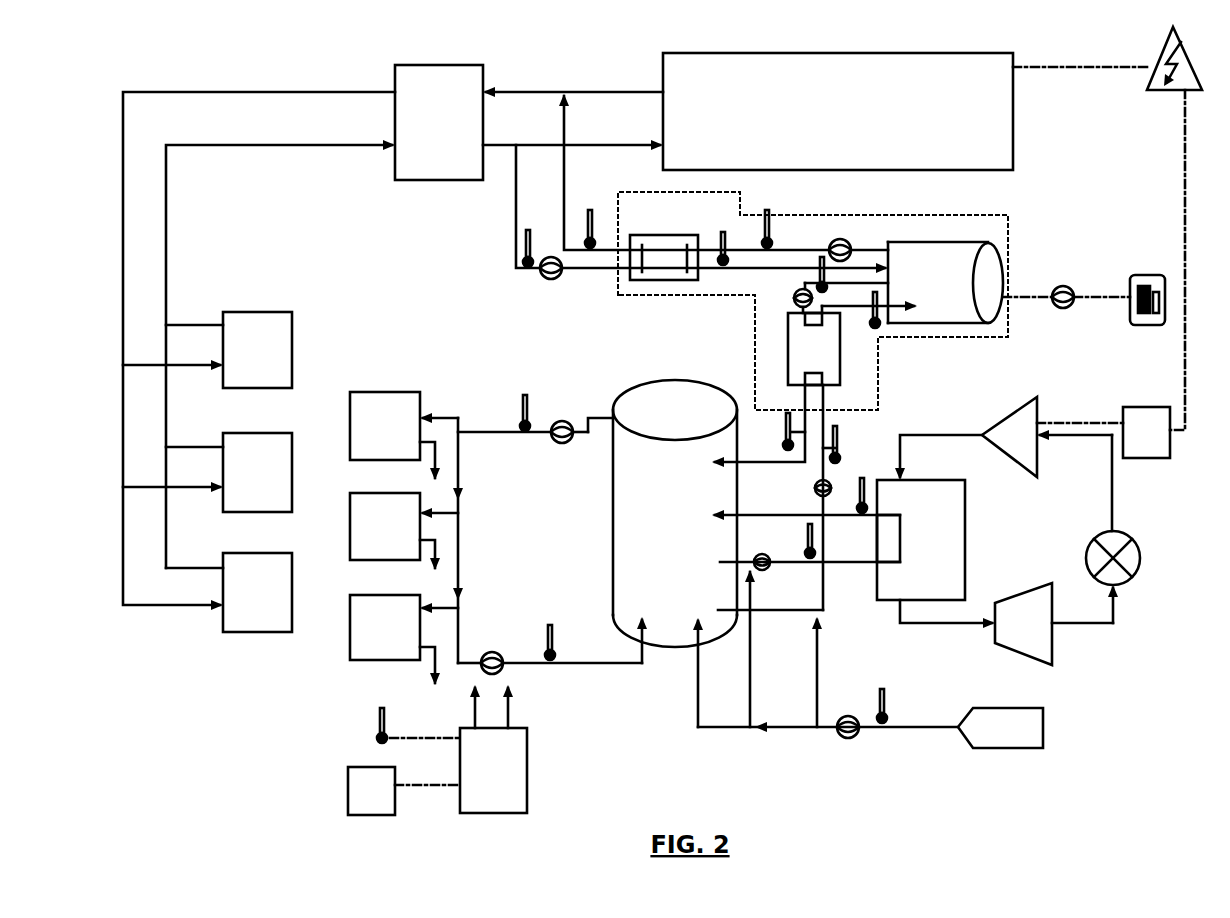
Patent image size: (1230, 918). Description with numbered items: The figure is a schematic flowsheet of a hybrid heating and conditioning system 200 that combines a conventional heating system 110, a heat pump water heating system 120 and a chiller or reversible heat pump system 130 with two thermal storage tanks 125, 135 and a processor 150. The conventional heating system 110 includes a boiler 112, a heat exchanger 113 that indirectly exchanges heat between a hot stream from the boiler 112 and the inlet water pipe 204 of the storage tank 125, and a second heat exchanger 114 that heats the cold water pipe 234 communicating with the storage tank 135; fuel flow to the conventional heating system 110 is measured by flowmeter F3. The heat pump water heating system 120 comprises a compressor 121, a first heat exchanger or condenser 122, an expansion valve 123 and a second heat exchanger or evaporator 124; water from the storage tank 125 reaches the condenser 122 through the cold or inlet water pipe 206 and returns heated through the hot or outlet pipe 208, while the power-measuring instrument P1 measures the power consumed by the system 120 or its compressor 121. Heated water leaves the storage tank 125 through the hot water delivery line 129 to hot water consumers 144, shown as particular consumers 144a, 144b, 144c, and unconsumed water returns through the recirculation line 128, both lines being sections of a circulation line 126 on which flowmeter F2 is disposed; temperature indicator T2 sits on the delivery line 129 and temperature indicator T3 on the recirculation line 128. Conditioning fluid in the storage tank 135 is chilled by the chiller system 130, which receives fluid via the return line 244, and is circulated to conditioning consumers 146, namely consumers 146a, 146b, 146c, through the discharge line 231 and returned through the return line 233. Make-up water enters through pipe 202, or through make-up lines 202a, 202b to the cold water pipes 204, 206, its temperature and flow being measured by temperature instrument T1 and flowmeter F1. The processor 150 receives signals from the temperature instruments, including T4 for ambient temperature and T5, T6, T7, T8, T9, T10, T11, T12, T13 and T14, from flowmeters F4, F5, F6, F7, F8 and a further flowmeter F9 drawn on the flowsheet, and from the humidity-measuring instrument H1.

The chiller or reversible heat pump system 130 is at (838, 111).
The thermal storage tank 135 is at (439, 122).
The discharge line 231 is at (259, 338).
The return line 233 is at (280, 343).
The return line 244 is at (573, 118).
The cold water pipe 234 is at (680, 183).
The conditioning consumers 146 is at (251, 290).
The conditioning consumer 146a is at (257, 350).
The conditioning consumer 146b is at (257, 472).
The conditioning consumer 146c is at (257, 592).
The hot water consumers 144 is at (396, 360).
The hot water consumer 144a is at (385, 426).
The hot water consumer 144b is at (385, 526).
The hot water consumer 144c is at (385, 627).
The hot water delivery line 129 is at (516, 537).
The circulation line 126 is at (474, 478).
The recirculation line 128 is at (552, 656).
The thermal storage tank 125 is at (675, 513).
The conventional heating system 110 is at (813, 301).
The second heat exchanger 114 is at (664, 257).
The boiler 112 is at (945, 282).
The heat exchanger 113 is at (814, 349).
The hybrid heating and conditioning system 200 is at (1164, 200).
The heat pump water heating system 120 is at (1081, 648).
The compressor 121 is at (966, 438).
The first heat exchanger or condenser 122 is at (921, 540).
The expansion valve 123 is at (1006, 624).
The second heat exchanger or evaporator 124 is at (1130, 577).
The make-up water pipe 202 is at (870, 725).
The make-up line 202a is at (719, 687).
The make-up line 202b is at (794, 672).
The inlet water pipe 204 is at (787, 597).
The cold or inlet water pipe 206 is at (810, 644).
The hot or outlet pipe 208 is at (806, 505).
The processor 150 is at (493, 749).
The humidity-measuring instrument H1 is at (404, 791).
The power-measuring instrument P1 is at (1111, 310).
The temperature instrument T1 is at (882, 692).
The temperature indicator T2 is at (525, 399).
The temperature indicator T3 is at (550, 629).
The temperature instrument T4 is at (416, 712).
The temperature instrument T5 is at (801, 537).
The temperature instrument T6 is at (853, 495).
The temperature instrument T7 is at (842, 497).
The temperature instrument T8 is at (758, 426).
The temperature instrument T9 is at (869, 312).
The temperature instrument T10 is at (816, 238).
The temperature instrument T11 is at (769, 213).
The temperature instrument T12 is at (722, 233).
The temperature instrument T13 is at (589, 213).
The temperature instrument T14 is at (531, 235).
The flowmeter F1 is at (848, 738).
The flowmeter F2 is at (492, 646).
The flowmeter F3 is at (1084, 306).
The flowmeter F4 is at (762, 549).
The flowmeter F5 is at (813, 490).
The flowmeter F6 is at (829, 298).
The flowmeter F7 is at (551, 282).
The flowmeter F8 is at (853, 243).
The flow meter F9 is at (563, 420).